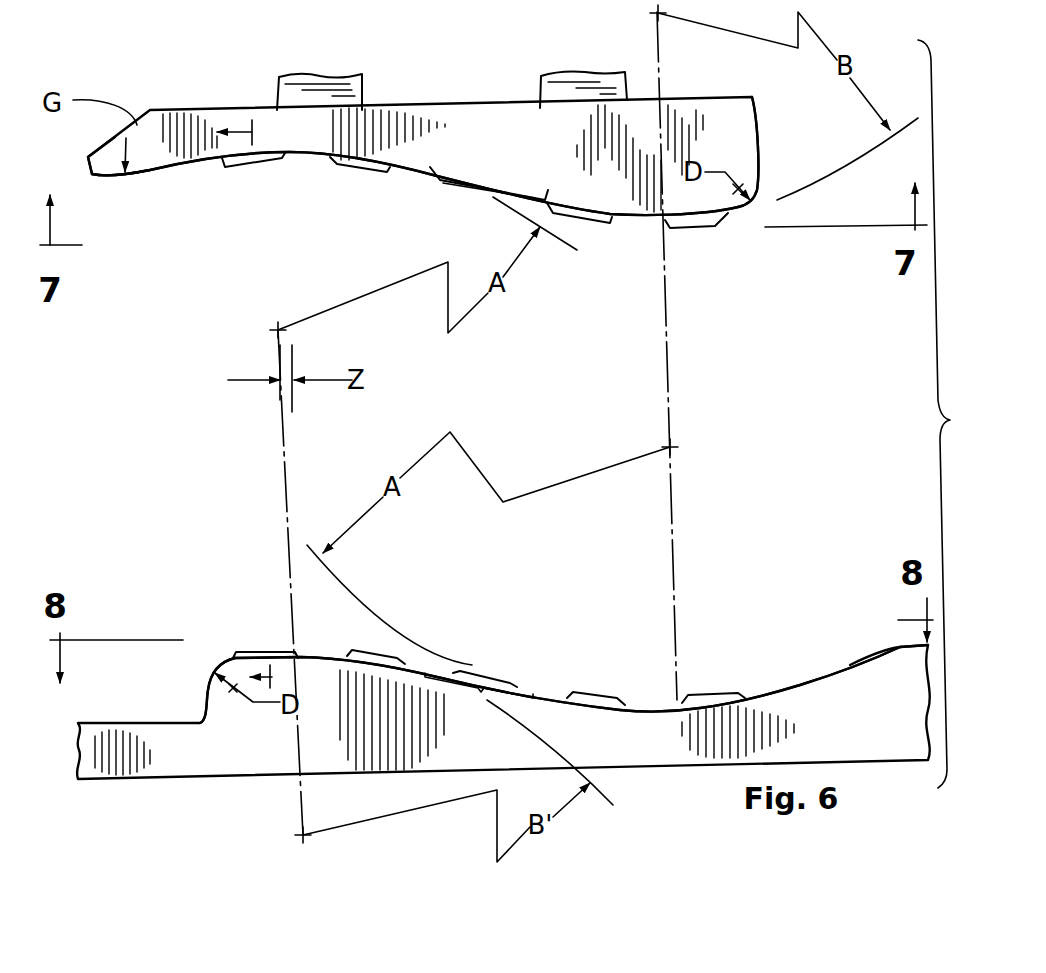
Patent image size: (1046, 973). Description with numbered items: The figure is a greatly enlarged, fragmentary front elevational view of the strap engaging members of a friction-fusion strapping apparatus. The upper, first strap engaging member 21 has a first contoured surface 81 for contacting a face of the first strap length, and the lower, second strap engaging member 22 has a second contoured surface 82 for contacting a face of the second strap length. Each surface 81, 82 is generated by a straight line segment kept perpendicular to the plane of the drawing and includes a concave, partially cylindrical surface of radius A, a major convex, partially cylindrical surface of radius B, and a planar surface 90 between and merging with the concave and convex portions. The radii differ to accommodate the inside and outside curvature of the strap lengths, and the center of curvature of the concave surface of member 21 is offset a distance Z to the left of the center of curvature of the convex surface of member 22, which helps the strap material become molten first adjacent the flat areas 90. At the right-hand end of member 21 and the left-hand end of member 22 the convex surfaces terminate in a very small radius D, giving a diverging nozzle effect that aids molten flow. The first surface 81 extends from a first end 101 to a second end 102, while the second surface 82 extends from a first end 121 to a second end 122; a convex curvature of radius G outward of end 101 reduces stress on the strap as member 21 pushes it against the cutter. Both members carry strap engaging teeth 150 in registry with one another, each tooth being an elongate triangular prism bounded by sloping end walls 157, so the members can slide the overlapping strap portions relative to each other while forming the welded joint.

The first strap engaging member 21 is at (193, 105).
The second strap engaging member 22 is at (228, 782).
The first contoured surface 81 is at (183, 165).
The second contoured surface 82 is at (823, 682).
The planar surface 90 is at (497, 177).
The first end of first engaging surface 101 is at (138, 177).
The second end of first engaging surface 102 is at (748, 205).
The first end of second engaging surface 121 is at (217, 667).
The second end of second engaging surface 122 is at (888, 647).
The strap engaging teeth 150 is at (262, 165).
The sloping end walls 157 is at (213, 165).